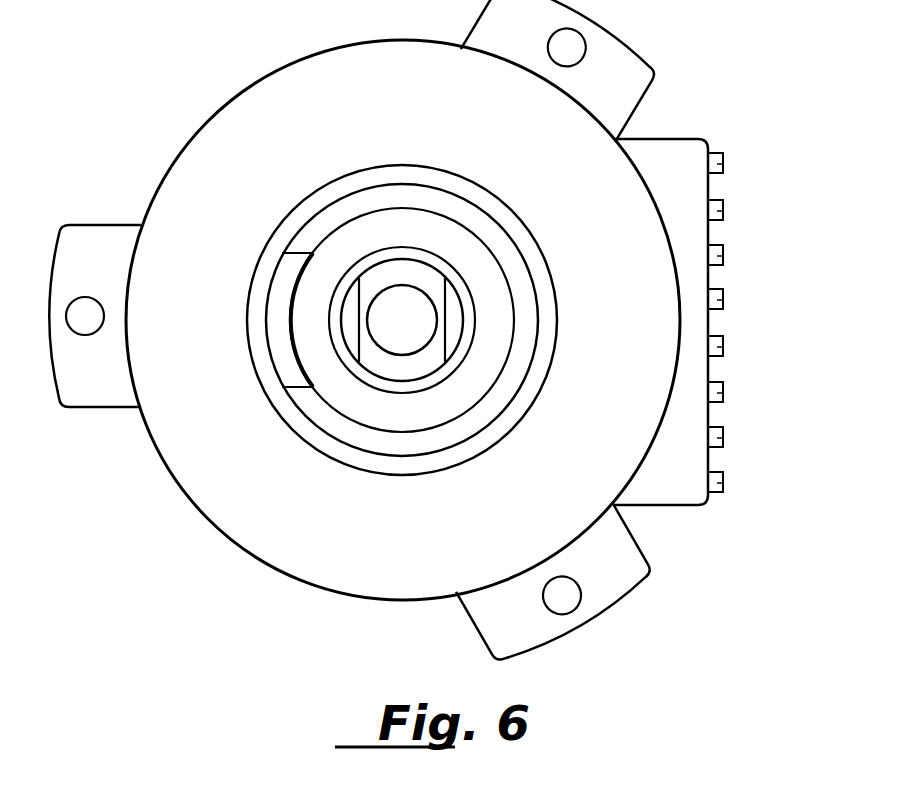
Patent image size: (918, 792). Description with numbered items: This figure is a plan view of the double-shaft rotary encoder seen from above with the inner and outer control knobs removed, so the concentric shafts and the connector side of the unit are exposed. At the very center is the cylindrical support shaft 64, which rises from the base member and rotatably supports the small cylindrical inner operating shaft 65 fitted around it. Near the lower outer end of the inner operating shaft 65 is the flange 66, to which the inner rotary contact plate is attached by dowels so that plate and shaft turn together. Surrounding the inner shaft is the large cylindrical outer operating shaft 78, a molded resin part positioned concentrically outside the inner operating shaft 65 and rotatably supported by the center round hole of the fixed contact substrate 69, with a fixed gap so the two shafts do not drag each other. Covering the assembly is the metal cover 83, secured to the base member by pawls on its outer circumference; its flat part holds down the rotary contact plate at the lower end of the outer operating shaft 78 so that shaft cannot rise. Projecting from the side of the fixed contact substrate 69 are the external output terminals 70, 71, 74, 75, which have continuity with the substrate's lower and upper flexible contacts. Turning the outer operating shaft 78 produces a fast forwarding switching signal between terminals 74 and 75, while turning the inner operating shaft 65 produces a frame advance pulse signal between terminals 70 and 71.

The cylindrical support shaft 64 is at (422, 323).
The small cylindrical inner operating shaft 65 is at (418, 362).
The flange 66 is at (632, 77).
The fixed contact substrate 69 is at (689, 490).
The external output terminal 70 is at (723, 398).
The external output terminal 71 is at (723, 440).
The external output terminal 74 is at (723, 345).
The external output terminal 75 is at (723, 300).
The large cylindrical outer operating shaft 78 is at (400, 448).
The metal cover 83 is at (605, 183).